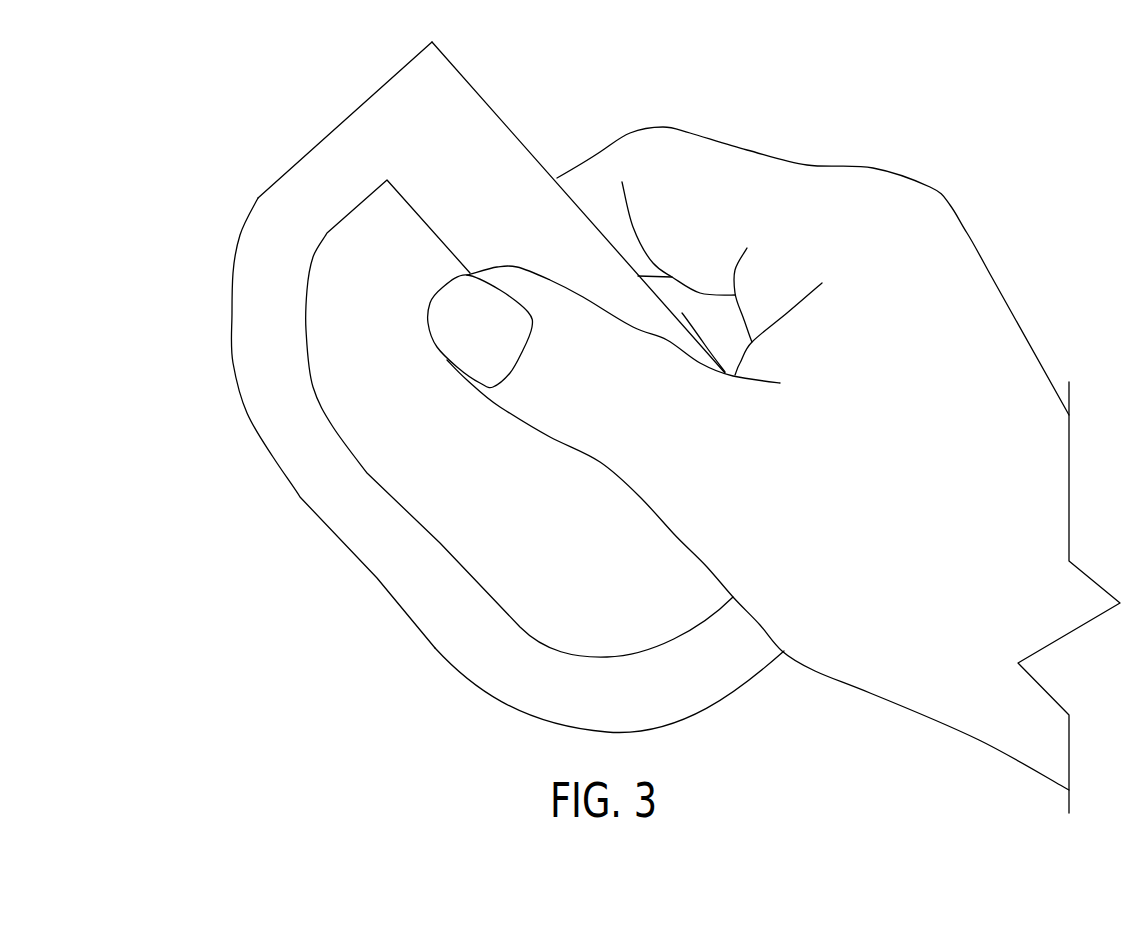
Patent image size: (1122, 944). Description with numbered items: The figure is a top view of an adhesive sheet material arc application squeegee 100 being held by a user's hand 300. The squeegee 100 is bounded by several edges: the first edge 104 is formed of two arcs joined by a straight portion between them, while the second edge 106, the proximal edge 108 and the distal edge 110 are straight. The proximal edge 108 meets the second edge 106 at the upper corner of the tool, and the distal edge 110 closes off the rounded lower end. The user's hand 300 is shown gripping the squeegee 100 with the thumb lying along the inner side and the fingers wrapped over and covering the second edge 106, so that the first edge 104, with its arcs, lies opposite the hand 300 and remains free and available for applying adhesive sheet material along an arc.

The adhesive sheet material arc application squeegee 100 is at (506, 399).
The first edge 104 is at (300, 497).
The second edge 106 is at (492, 133).
The proximal edge 108 is at (377, 89).
The distal edge 110 is at (757, 673).
The user's hand 300 is at (931, 247).